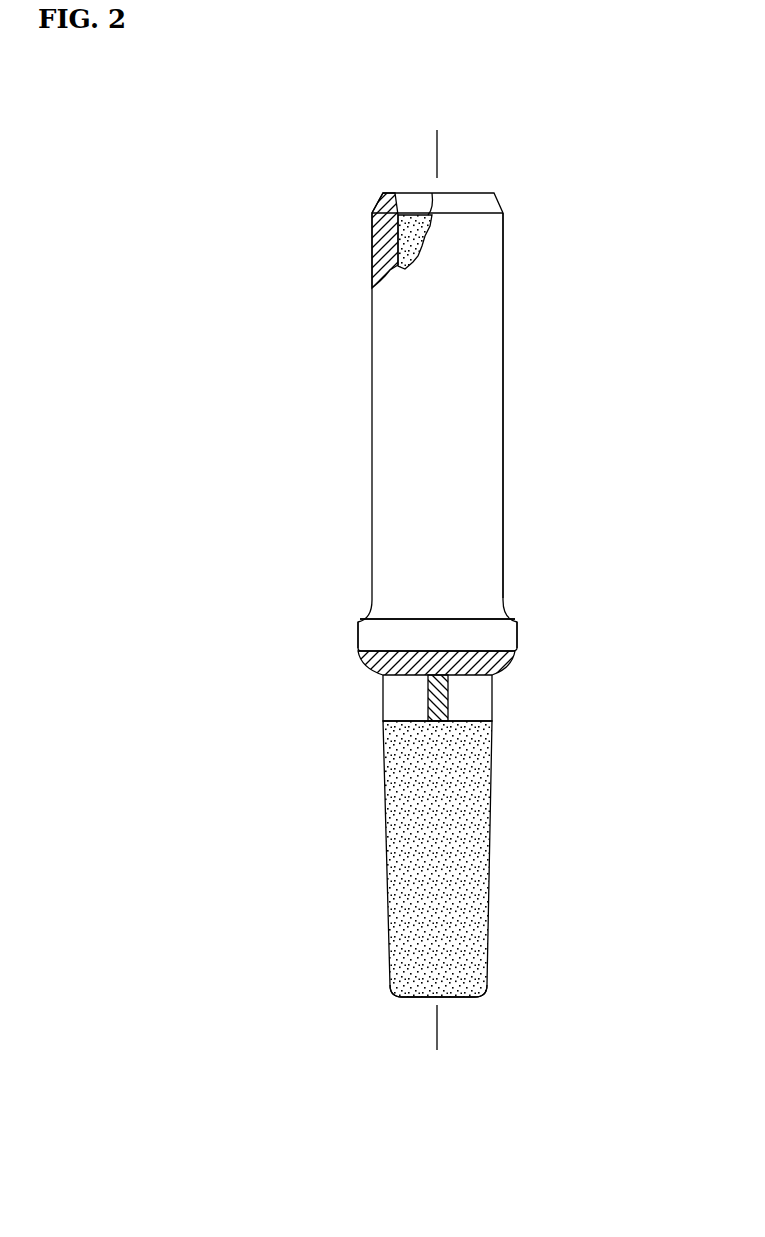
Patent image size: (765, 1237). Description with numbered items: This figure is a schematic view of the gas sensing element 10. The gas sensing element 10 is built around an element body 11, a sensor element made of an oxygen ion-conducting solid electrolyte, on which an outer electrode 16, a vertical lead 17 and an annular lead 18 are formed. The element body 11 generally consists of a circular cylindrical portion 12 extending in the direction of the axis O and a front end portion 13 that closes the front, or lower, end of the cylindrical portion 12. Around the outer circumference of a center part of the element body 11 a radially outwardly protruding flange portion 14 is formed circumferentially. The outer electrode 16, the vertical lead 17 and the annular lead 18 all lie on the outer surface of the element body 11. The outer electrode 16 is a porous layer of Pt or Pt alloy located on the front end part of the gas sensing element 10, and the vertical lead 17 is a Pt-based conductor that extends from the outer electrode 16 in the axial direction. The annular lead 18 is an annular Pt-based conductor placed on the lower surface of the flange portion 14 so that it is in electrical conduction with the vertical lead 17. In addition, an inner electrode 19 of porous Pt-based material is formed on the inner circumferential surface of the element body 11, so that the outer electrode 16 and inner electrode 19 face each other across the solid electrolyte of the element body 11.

The gas sensing element 10 is at (506, 592).
The element body 11 is at (480, 422).
The circular cylindrical portion 12 is at (503, 438).
The front end portion 13 is at (463, 997).
The flange portion 14 is at (517, 630).
The outer electrode 16 is at (490, 838).
The vertical lead 17 is at (448, 697).
The annular lead 18 is at (505, 660).
The inner electrode 19 is at (413, 215).